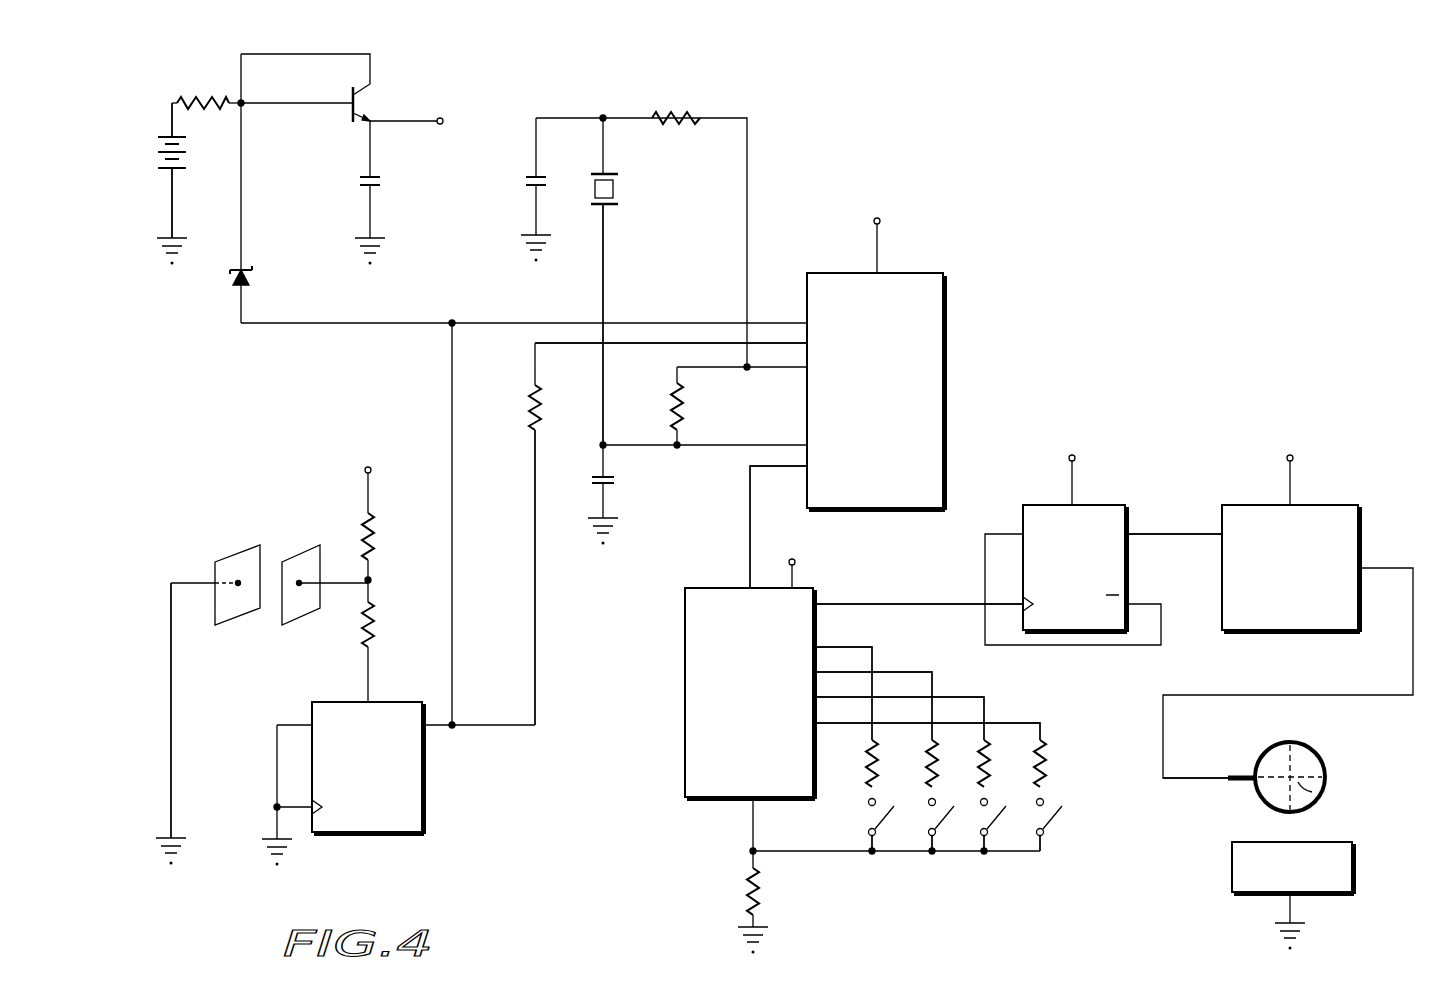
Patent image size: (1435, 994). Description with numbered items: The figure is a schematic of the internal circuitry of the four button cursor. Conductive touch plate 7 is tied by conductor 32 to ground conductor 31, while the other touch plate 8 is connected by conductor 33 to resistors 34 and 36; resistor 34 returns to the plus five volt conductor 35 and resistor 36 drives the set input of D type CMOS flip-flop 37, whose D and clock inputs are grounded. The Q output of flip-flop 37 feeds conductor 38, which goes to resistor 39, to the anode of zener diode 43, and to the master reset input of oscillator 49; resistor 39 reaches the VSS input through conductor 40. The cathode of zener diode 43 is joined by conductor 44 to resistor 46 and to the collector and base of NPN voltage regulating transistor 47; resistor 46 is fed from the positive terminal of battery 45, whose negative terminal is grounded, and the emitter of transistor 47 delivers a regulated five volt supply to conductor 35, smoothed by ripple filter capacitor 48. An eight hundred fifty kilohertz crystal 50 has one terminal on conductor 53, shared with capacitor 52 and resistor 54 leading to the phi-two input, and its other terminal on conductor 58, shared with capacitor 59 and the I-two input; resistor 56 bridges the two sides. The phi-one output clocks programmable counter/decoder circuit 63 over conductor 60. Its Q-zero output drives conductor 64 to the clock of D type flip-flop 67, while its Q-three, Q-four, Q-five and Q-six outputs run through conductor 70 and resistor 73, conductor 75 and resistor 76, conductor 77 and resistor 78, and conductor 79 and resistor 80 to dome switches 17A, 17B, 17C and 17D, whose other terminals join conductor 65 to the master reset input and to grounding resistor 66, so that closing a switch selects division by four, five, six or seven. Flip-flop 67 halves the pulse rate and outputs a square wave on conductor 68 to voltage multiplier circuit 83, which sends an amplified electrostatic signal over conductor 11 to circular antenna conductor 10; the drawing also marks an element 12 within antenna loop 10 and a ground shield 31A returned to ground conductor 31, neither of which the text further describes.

The conductive touch plate 7 is at (234, 562).
The touch plate conductor 8 is at (296, 562).
The circular antenna conductor 10 is at (1322, 762).
The conductor 11 is at (1190, 778).
The tube electrode 12 is at (1312, 792).
The dome switch 17A is at (876, 834).
The dome switch 17B is at (936, 834).
The dome switch 17C is at (988, 834).
The dome switch 17D is at (1044, 834).
The ground conductor 31 is at (160, 238).
The ground shield 31A is at (1354, 866).
The conductor 32 is at (171, 646).
The conductor 33 is at (372, 580).
The resistor 34 is at (376, 538).
The +5 volt conductor 35 is at (444, 121).
The resistor 36 is at (376, 636).
The D type CMOS flip-flop 37 is at (406, 702).
The conductor 38 is at (535, 496).
The resistor 39 is at (530, 406).
The conductor 40 is at (535, 343).
The zener diode 43 is at (250, 266).
The conductor 44 is at (241, 103).
The battery 45 is at (158, 132).
The resistor 46 is at (196, 108).
The NPN voltage regulating transistor 47 is at (350, 116).
The capacitor 48 is at (360, 186).
The oscillator 49 is at (945, 305).
The crystal 50 is at (613, 191).
The capacitor 52 is at (526, 176).
The conductor 53 is at (604, 117).
The resistor 54 is at (658, 116).
The resistor 56 is at (672, 404).
The conductor 58 is at (604, 264).
The capacitor 59 is at (596, 483).
The conductor 60 is at (750, 484).
The programmable counter/decoder circuit 63 is at (685, 620).
The conductor 64 is at (880, 604).
The conductor 65 is at (753, 851).
The resistor 66 is at (748, 886).
The D type CMOS flip-flop 67 is at (1094, 505).
The conductor 68 is at (1170, 534).
The conductor 70 is at (846, 647).
The resistor 73 is at (876, 762).
The conductor 75 is at (906, 672).
The resistor 76 is at (936, 762).
The conductor 77 is at (958, 697).
The resistor 78 is at (988, 762).
The conductor 79 is at (1012, 723).
The resistor 80 is at (1044, 762).
The voltage multiplier circuit 83 is at (1310, 505).